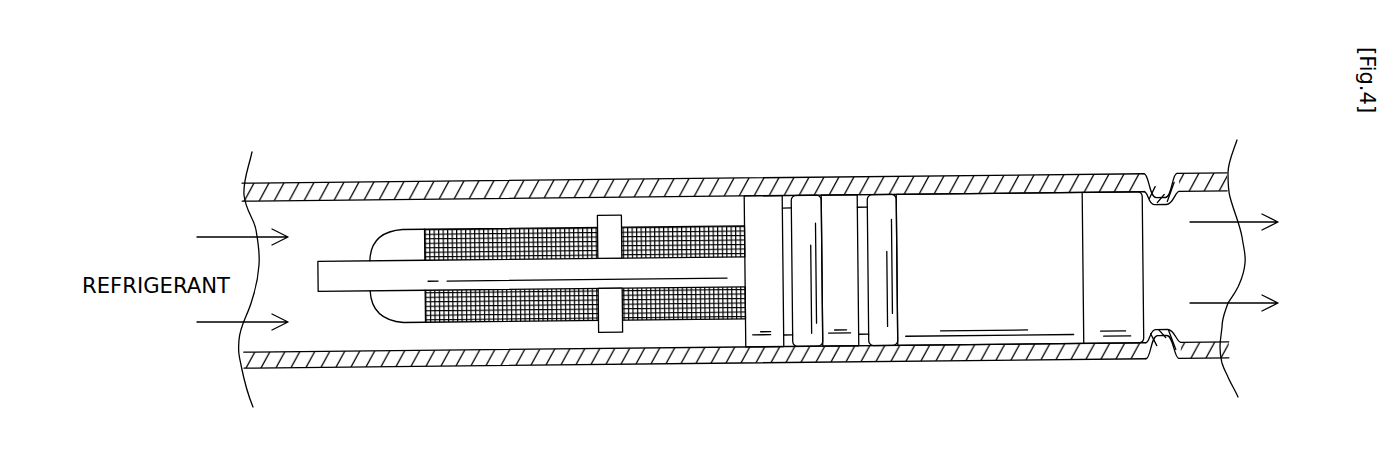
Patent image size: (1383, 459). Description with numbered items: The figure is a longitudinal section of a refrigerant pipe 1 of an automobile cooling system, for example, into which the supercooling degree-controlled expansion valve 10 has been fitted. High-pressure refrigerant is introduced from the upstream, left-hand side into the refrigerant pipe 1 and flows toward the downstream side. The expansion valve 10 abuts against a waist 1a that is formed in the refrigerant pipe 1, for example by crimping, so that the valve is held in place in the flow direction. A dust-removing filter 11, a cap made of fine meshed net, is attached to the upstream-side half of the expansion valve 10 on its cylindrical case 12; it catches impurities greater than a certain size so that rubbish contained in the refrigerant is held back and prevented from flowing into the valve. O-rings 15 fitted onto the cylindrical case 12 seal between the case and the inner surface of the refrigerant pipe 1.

The refrigerant pipe 1 is at (330, 183).
The waist 1a is at (1162, 188).
The supercooling degree-controlled expansion valve 10 is at (699, 207).
The dust-removing filter 11 is at (497, 228).
The cylindrical case 12 is at (763, 210).
The O-rings 15 is at (885, 207).